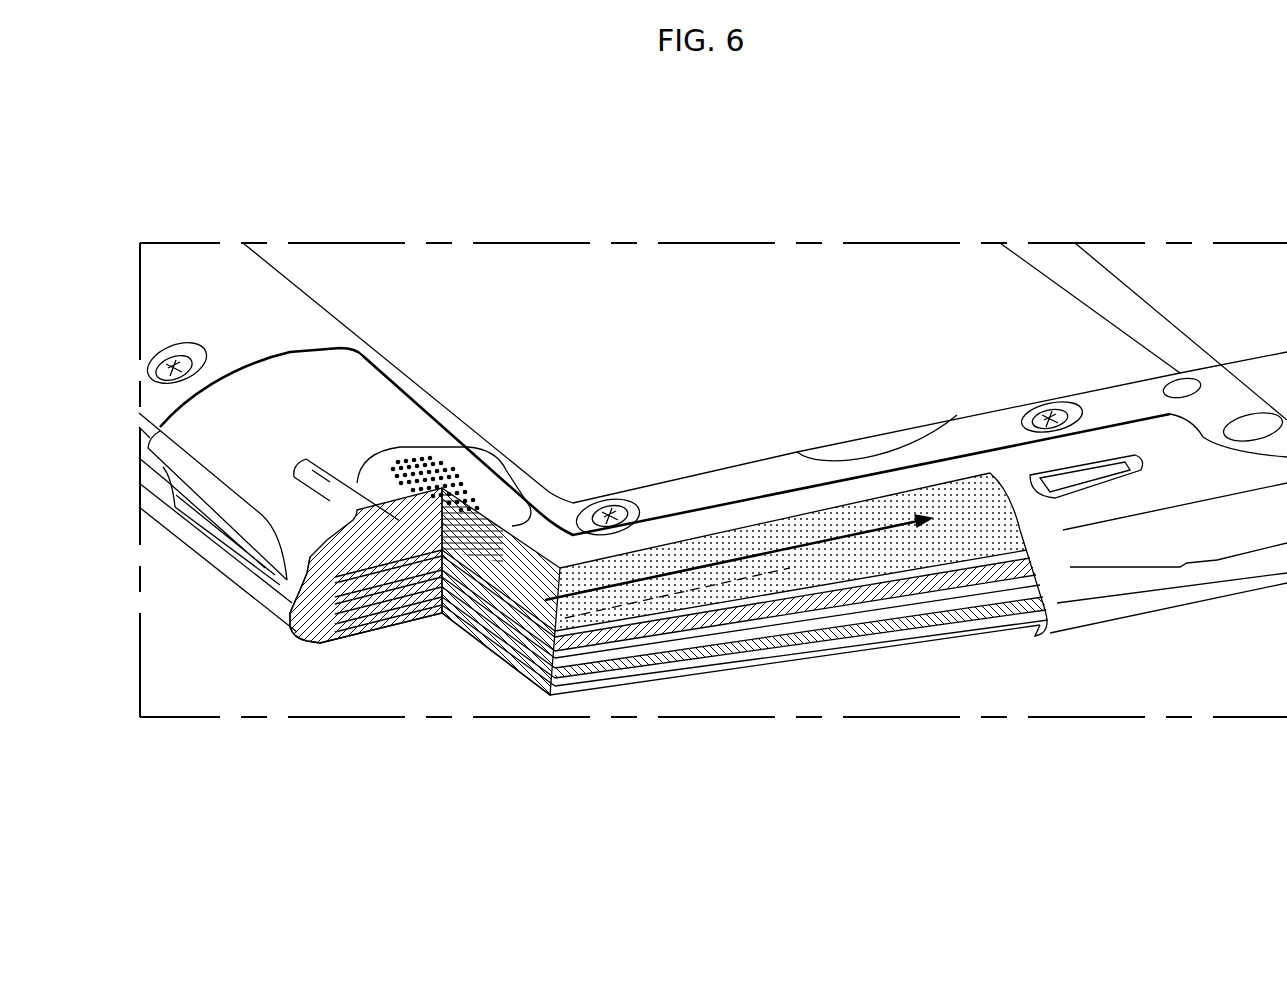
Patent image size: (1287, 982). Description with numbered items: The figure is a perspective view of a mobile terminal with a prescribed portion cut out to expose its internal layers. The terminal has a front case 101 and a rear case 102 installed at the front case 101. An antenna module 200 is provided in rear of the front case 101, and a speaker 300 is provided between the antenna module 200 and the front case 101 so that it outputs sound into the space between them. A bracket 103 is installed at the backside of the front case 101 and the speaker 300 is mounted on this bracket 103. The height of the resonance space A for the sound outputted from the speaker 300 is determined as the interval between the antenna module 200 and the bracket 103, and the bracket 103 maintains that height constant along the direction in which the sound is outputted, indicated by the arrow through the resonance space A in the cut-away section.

The front case 101 is at (250, 578).
The rear case 102 is at (1180, 343).
The bracket 103 is at (760, 567).
The antenna module 200 is at (268, 435).
The speaker 300 is at (392, 536).
The resonance space A is at (585, 618).